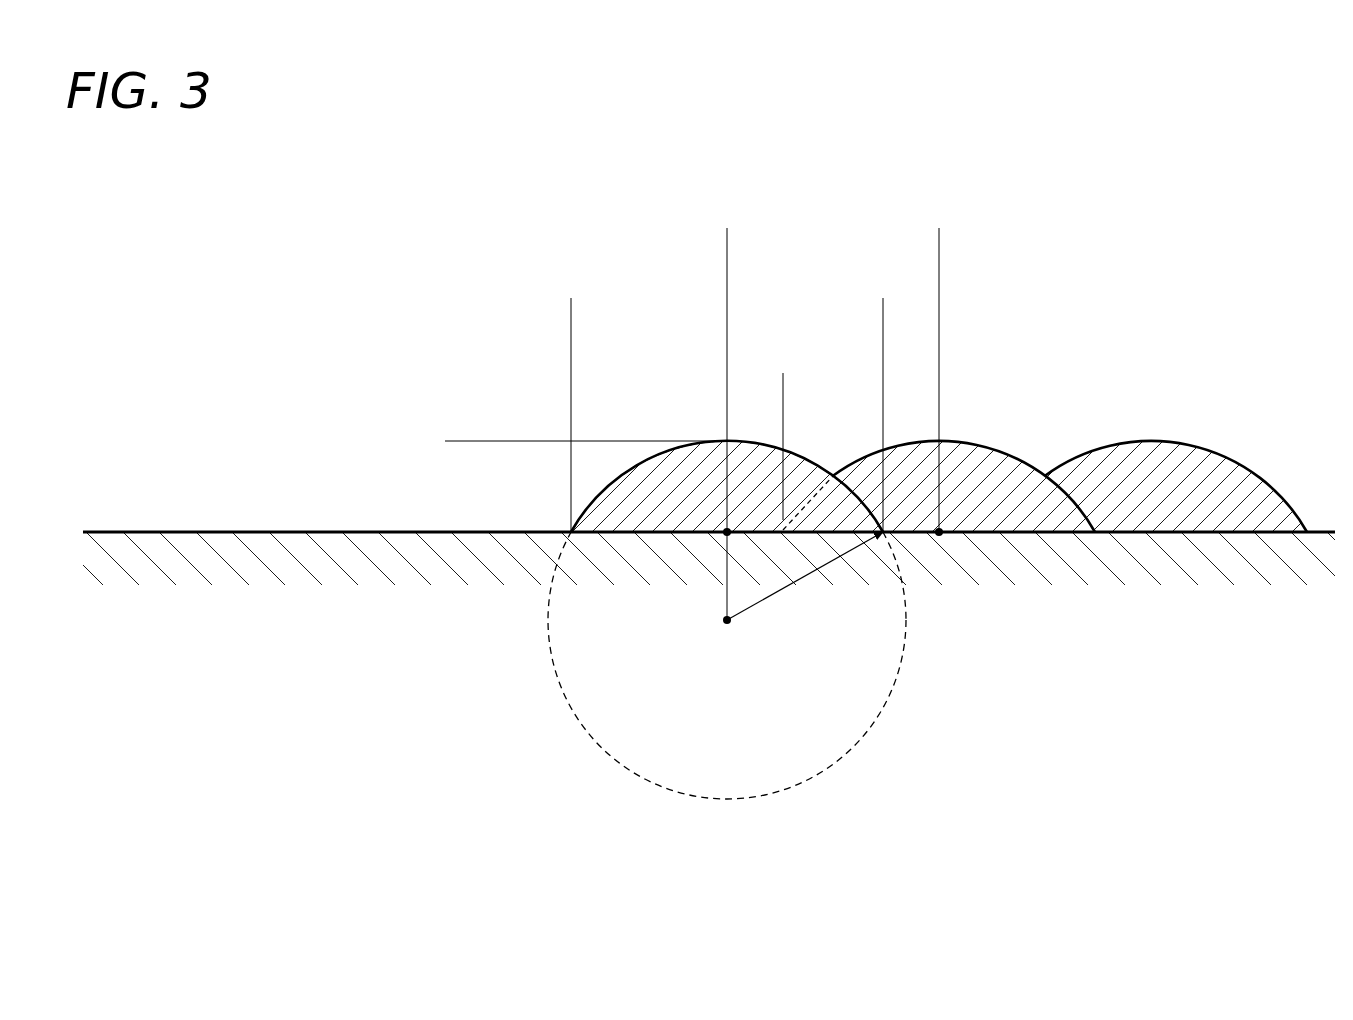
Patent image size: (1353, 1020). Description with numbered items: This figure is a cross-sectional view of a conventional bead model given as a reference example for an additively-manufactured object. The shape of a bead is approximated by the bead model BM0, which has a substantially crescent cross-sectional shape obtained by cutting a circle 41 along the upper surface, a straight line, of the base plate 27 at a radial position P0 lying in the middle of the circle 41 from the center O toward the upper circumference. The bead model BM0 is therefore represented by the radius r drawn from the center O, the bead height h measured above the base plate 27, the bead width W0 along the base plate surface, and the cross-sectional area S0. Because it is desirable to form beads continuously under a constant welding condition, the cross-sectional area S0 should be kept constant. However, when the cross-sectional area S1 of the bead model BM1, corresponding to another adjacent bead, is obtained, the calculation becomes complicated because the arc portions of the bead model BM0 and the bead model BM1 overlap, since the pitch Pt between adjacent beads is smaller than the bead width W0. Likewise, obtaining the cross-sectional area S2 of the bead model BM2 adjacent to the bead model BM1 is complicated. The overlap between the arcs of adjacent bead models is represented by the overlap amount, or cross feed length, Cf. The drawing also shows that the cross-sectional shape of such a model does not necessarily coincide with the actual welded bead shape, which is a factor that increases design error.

The base plate 27 is at (248, 648).
The circle 41 is at (553, 668).
The bead model BM0 is at (638, 444).
The bead model BM1 is at (975, 446).
The bead model BM2 is at (1205, 449).
The cross-sectional area S0 is at (649, 508).
The cross-sectional area S1 is at (992, 508).
The cross-sectional area S2 is at (1216, 508).
The radial position P0 is at (725, 537).
The center O is at (715, 630).
The radius r is at (805, 576).
The bead height h is at (453, 441).
The pitch Pt is at (939, 238).
The bead width W0 is at (883, 306).
The overlap amount Cf is at (883, 381).